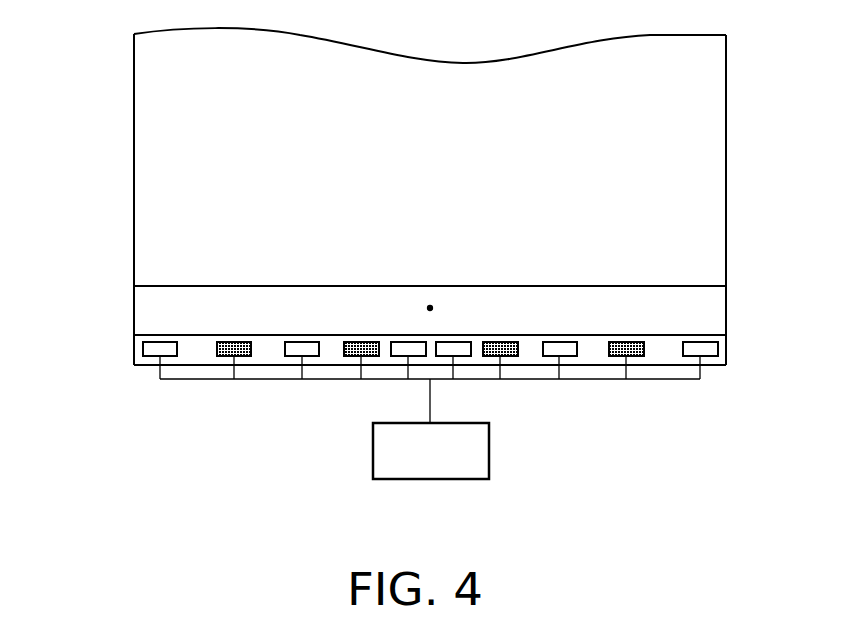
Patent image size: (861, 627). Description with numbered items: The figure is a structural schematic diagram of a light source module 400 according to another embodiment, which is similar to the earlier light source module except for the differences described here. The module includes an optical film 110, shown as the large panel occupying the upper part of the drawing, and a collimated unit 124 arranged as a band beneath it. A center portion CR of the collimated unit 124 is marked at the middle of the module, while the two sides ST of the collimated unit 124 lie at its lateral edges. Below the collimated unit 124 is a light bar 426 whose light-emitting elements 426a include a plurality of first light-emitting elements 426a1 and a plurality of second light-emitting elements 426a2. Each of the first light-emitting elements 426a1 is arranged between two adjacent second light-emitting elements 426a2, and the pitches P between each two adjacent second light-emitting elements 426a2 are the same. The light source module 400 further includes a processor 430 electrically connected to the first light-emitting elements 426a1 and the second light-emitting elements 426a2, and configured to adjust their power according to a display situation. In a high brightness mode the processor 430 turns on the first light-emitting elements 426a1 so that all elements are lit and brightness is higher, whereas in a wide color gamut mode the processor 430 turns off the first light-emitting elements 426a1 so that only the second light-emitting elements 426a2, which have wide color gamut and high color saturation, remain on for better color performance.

The light source module 400 is at (797, 482).
The optical film 110 is at (690, 137).
The collimated unit 124 is at (706, 322).
The two sides ST is at (724, 302).
The center portion CR is at (430, 297).
The light bar 426 is at (419, 419).
The light-emitting elements 426a is at (375, 422).
The first light-emitting elements 426a1 is at (228, 357).
The second light-emitting elements 426a2 is at (143, 351).
The pitch P is at (700, 384).
The processor 430 is at (452, 480).